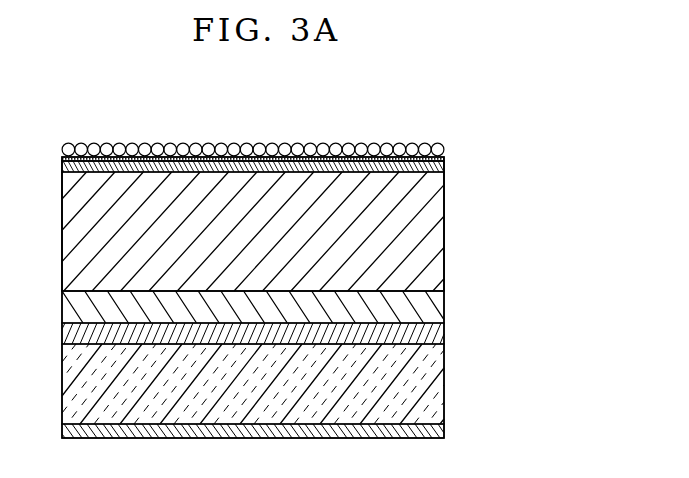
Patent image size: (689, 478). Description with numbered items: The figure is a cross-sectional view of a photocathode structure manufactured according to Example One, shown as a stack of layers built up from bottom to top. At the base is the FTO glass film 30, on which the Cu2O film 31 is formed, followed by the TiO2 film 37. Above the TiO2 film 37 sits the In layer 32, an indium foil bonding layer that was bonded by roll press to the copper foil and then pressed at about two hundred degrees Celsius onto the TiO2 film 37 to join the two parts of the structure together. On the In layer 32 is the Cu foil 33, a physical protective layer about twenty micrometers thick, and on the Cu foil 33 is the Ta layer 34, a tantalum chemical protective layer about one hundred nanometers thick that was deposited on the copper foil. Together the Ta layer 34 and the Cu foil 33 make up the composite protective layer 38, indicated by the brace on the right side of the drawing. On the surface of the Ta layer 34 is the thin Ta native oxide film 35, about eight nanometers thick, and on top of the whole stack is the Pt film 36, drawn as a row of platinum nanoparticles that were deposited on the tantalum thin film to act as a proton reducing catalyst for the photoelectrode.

The FTO glass film 30 is at (440, 430).
The Cu2O film 31 is at (435, 388).
The TiO2 film 37 is at (438, 338).
The In layer 32 is at (435, 312).
The Cu foil 33 is at (435, 237).
The Ta layer 34 is at (443, 170).
The Ta native oxide film 35 is at (443, 159).
The Pt film 36 is at (441, 150).
The composite protective layer 38 is at (517, 181).